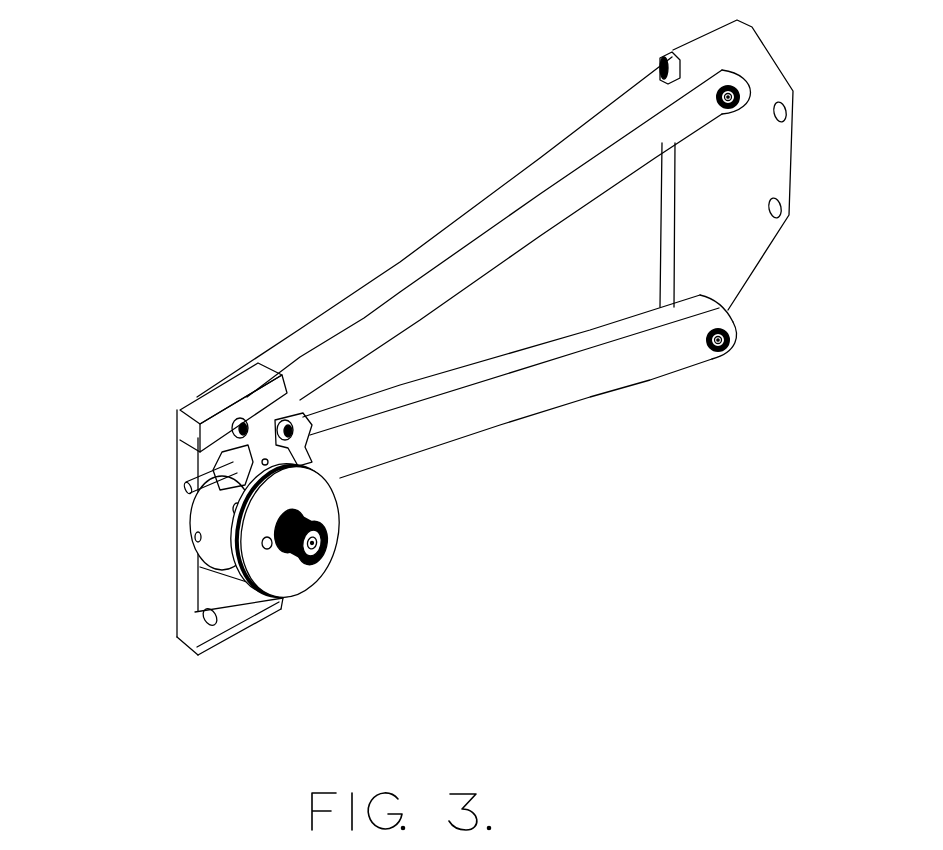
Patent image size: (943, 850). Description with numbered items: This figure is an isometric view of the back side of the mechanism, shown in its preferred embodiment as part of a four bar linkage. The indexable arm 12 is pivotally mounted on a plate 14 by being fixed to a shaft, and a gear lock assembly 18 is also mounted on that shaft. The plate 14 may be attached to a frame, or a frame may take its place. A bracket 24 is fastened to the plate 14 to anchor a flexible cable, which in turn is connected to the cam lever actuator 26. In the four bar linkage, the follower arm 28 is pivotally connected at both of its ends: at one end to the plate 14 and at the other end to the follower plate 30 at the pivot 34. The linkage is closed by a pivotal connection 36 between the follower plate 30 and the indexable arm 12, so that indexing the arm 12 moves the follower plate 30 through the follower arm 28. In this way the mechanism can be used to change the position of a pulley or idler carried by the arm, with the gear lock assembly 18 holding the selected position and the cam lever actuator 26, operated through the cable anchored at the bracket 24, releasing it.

The indexable arm 12 is at (542, 388).
The plate 14 is at (210, 405).
The gear lock assembly 18 is at (417, 595).
The bracket 24 is at (197, 442).
The cam lever actuator 26 is at (298, 400).
The follower arm 28 is at (513, 202).
The follower plate 30 is at (742, 253).
The pivot 34 is at (738, 86).
The pivotal connection 36 is at (730, 342).